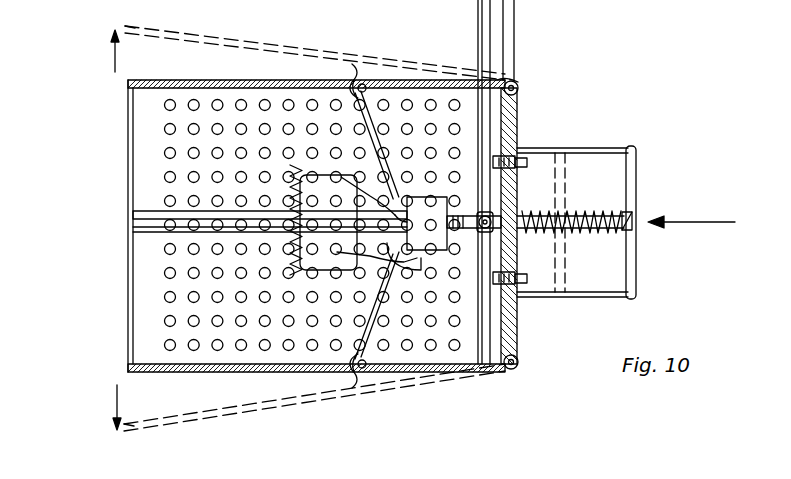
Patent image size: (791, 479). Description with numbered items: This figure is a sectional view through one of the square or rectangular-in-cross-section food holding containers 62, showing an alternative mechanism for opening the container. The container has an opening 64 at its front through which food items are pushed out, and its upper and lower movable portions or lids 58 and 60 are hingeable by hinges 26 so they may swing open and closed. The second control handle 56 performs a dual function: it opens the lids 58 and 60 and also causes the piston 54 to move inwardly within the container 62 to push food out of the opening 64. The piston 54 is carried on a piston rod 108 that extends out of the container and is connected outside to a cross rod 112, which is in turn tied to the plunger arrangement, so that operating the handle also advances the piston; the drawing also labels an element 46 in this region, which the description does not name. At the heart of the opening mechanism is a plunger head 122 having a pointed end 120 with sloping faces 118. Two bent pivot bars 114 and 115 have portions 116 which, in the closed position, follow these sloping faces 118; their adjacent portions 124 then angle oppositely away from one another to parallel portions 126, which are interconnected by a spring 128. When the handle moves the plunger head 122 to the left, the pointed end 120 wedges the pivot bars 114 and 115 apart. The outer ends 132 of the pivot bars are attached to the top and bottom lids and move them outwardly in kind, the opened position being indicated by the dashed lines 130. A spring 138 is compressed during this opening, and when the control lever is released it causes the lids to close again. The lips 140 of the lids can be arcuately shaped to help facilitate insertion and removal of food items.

The hinge 26 is at (518, 84).
The adjusting screw 46 is at (588, 225).
The piston 54 is at (600, 120).
The second control handle 56 is at (522, 14).
The movable portion or lid 58 is at (228, 76).
The movable portion or lid 60 is at (205, 380).
The food holding container 62 is at (130, 217).
The opening 64 is at (120, 192).
The piston rod 108 is at (608, 147).
The cross rod 112 is at (632, 202).
The pivot bar 114 is at (383, 135).
The pivot bar 115 is at (395, 320).
The portion of pivot bar 116 is at (415, 237).
The sloping face 118 is at (447, 240).
The pointed end 120 is at (433, 187).
The plunger head 122 is at (400, 225).
The adjacent portion 124 is at (300, 255).
The parallel portion 126 is at (300, 165).
The spring 128 is at (290, 235).
The dashed lines 130 is at (341, 55).
The outer end 132 is at (372, 92).
The spring 138 is at (626, 205).
The lip 140 is at (122, 80).